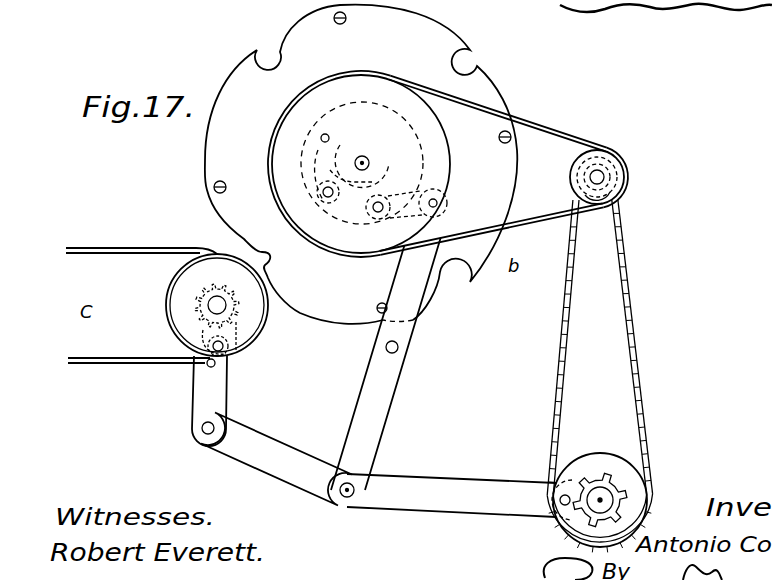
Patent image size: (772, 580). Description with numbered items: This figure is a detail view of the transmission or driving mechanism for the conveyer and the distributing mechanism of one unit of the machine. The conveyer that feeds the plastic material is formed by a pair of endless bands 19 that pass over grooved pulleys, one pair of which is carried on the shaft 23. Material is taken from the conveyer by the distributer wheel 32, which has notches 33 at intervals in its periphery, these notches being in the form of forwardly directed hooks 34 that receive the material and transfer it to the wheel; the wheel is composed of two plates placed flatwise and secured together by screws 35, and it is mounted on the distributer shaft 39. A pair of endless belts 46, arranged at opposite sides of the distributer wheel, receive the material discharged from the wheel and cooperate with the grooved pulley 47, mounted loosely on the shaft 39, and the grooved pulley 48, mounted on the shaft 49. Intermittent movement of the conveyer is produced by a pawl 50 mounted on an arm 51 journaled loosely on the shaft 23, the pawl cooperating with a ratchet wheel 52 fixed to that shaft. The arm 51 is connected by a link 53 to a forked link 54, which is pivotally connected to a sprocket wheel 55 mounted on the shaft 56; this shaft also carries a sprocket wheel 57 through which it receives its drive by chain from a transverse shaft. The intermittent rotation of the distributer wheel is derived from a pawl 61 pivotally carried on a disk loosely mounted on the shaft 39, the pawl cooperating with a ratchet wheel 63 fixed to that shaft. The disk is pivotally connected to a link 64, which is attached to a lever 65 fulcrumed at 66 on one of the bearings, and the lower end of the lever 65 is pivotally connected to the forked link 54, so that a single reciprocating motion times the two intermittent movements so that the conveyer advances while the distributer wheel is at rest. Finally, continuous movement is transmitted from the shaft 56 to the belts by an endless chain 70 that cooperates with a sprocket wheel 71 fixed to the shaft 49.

The endless bands 19 is at (141, 296).
The shaft 23 is at (208, 306).
The distributer wheel 32 is at (206, 153).
The notches 33 is at (287, 263).
The hooks 34 is at (257, 49).
The screws 35 is at (345, 21).
The distributer shaft 39 is at (369, 161).
The endless belts 46 is at (552, 135).
The grooved pulley 47 is at (453, 135).
The grooved pulley 48 is at (575, 150).
The shaft 49 is at (604, 175).
The pawl 50 is at (206, 346).
The arm 51 is at (193, 386).
The ratchet wheel 52 is at (238, 316).
The link 53 is at (270, 441).
The forked link 54 is at (416, 477).
The sprocket wheel 55 is at (588, 453).
The shaft 56 is at (607, 492).
The sprocket wheel 57 is at (597, 512).
The pawl 61 is at (322, 182).
The ratchet wheel 63 is at (355, 140).
The link 64 is at (395, 219).
The lever 65 is at (388, 283).
The fulcrum 66 is at (398, 350).
The endless chain 70 is at (628, 378).
The sprocket wheel 71 is at (622, 196).